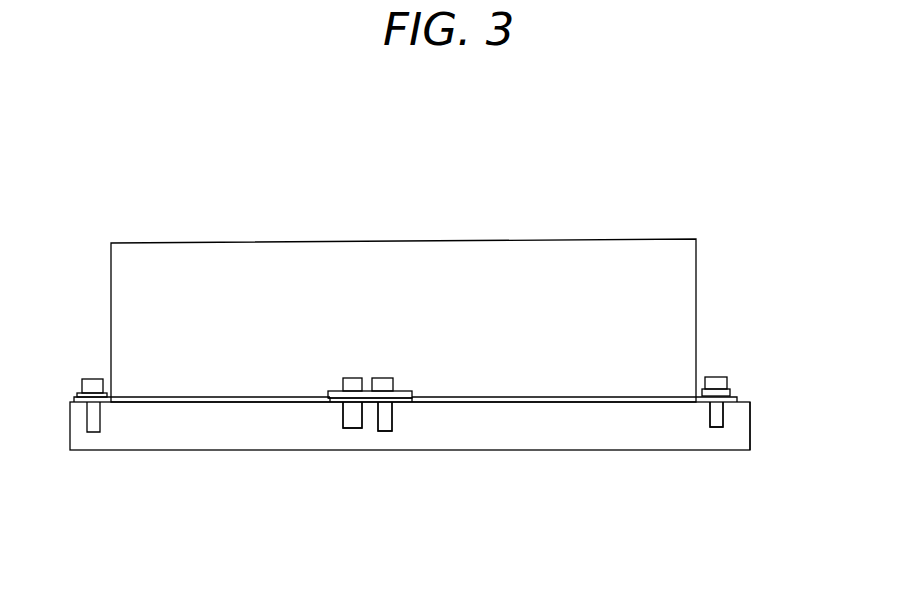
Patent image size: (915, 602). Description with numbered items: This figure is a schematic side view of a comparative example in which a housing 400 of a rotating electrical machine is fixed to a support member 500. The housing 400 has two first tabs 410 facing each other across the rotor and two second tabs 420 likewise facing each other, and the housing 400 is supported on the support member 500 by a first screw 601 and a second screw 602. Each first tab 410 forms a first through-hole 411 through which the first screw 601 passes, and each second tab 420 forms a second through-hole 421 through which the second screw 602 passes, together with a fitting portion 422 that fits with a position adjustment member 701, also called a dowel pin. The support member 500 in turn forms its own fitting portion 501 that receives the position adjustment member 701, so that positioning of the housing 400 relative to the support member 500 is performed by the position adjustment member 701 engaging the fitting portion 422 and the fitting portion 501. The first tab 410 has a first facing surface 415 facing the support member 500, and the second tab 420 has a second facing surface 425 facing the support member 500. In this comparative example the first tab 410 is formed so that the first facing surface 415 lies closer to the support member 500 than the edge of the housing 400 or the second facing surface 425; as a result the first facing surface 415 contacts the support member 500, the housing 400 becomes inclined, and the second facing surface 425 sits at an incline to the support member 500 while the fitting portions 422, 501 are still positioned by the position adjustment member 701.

The housing 400 is at (226, 272).
The first tab 410 is at (750, 403).
The first through-hole 411 is at (79, 393).
The first facing surface 415 is at (712, 405).
The second tab 420 is at (323, 400).
The second through-hole 421 is at (408, 390).
The fitting portion 422 is at (338, 386).
The second facing surface 425 is at (403, 402).
The support member 500 is at (503, 426).
The fitting portion 501 is at (345, 410).
The first screw 601 is at (88, 379).
The second screw 602 is at (388, 378).
The position adjustment member 701 is at (350, 378).